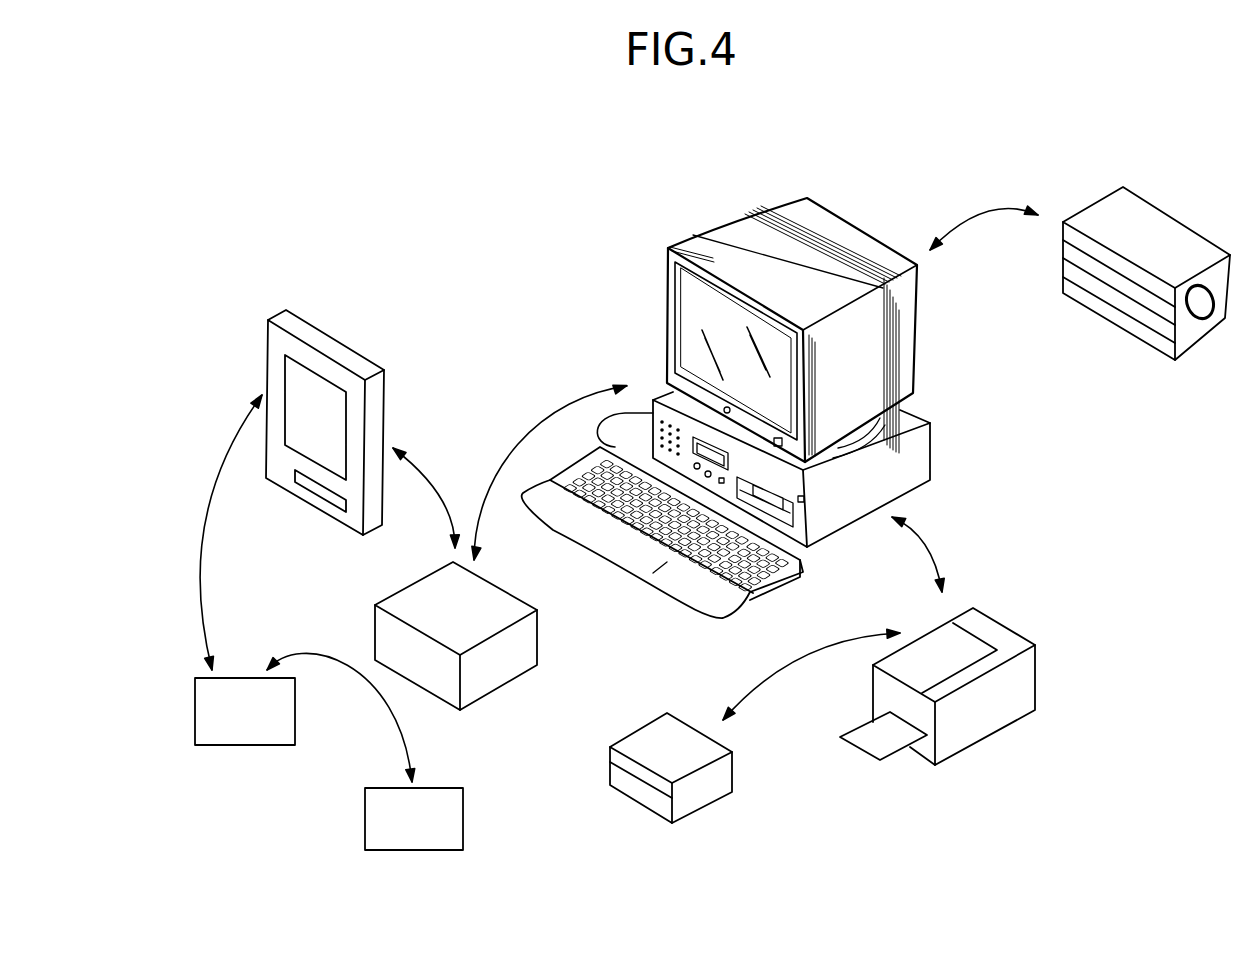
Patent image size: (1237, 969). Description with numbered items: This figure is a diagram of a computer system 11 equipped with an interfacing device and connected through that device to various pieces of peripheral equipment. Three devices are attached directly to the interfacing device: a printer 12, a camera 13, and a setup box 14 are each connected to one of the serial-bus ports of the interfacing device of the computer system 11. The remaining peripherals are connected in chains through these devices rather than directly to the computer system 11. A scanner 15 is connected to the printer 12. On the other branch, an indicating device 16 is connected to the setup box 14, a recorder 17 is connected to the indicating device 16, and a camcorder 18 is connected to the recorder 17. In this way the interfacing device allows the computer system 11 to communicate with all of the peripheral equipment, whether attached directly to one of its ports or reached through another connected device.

The computer system 11 is at (722, 221).
The printer 12 is at (1010, 627).
The camera 13 is at (1092, 205).
The setup box 14 is at (539, 637).
The scanner 15 is at (640, 730).
The indicating device 16 is at (340, 338).
The recorder 17 is at (245, 678).
The camcorder 18 is at (445, 788).